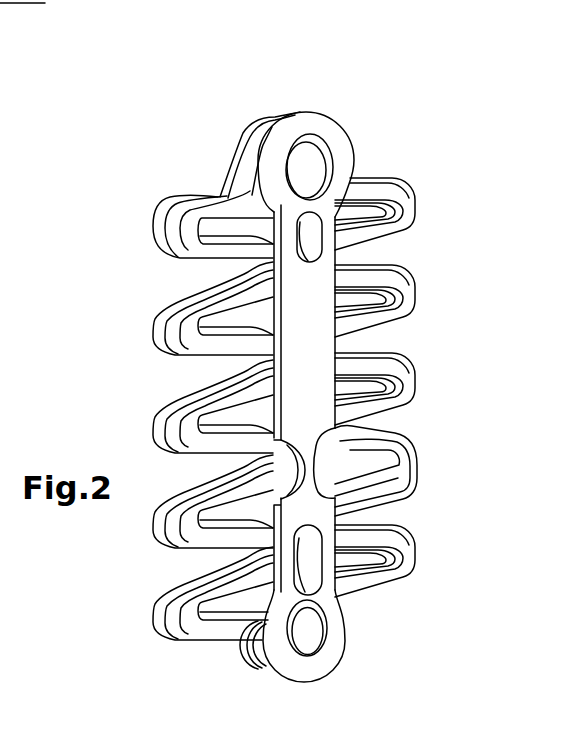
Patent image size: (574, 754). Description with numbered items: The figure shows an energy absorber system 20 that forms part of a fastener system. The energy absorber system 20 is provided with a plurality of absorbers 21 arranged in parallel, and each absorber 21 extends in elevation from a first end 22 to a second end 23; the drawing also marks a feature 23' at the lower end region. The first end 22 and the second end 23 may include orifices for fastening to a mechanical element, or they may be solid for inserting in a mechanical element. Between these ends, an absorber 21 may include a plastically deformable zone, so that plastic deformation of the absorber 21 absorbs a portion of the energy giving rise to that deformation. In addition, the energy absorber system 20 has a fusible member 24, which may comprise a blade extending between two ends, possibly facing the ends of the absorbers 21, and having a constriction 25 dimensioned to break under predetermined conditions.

The energy absorber system 20 is at (286, 373).
The absorber 21 is at (165, 210).
The first end 22 is at (214, 178).
The second end 23 is at (171, 645).
The pivot hole 23' is at (362, 638).
The fusible member 24 is at (280, 692).
The constriction 25 is at (322, 476).